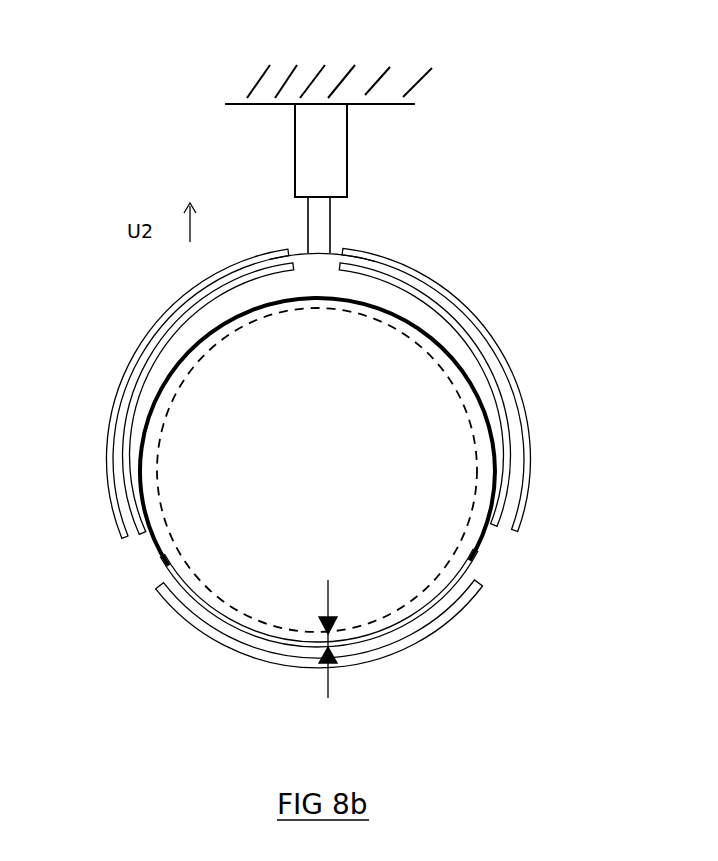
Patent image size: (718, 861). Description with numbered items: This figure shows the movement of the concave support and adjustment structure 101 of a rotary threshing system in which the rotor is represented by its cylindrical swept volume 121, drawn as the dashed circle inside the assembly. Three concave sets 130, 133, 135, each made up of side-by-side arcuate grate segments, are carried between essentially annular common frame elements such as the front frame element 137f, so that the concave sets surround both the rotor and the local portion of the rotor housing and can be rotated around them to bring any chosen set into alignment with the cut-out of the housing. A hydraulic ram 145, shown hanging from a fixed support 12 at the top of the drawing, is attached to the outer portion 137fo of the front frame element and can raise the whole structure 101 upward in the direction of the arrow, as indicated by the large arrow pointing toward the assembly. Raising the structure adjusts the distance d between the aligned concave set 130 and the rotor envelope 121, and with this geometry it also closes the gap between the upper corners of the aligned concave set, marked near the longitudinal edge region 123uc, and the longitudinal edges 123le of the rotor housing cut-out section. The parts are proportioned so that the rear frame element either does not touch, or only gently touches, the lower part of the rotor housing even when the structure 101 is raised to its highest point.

The fixed support / ground 12 is at (412, 67).
The hydraulic ram 145 is at (328, 157).
The concave support and adjustment structure 101 is at (160, 696).
The concave set 133 is at (133, 343).
The concave set 135 is at (505, 350).
The front frame element 137f is at (517, 458).
The outer portion of front frame element 137fo is at (505, 498).
The concave set 130 is at (452, 640).
The rotor swept volume 121 is at (463, 543).
The upper corner of edge 123uc is at (165, 571).
The longitudinal edge of cut-out section 123le is at (160, 573).